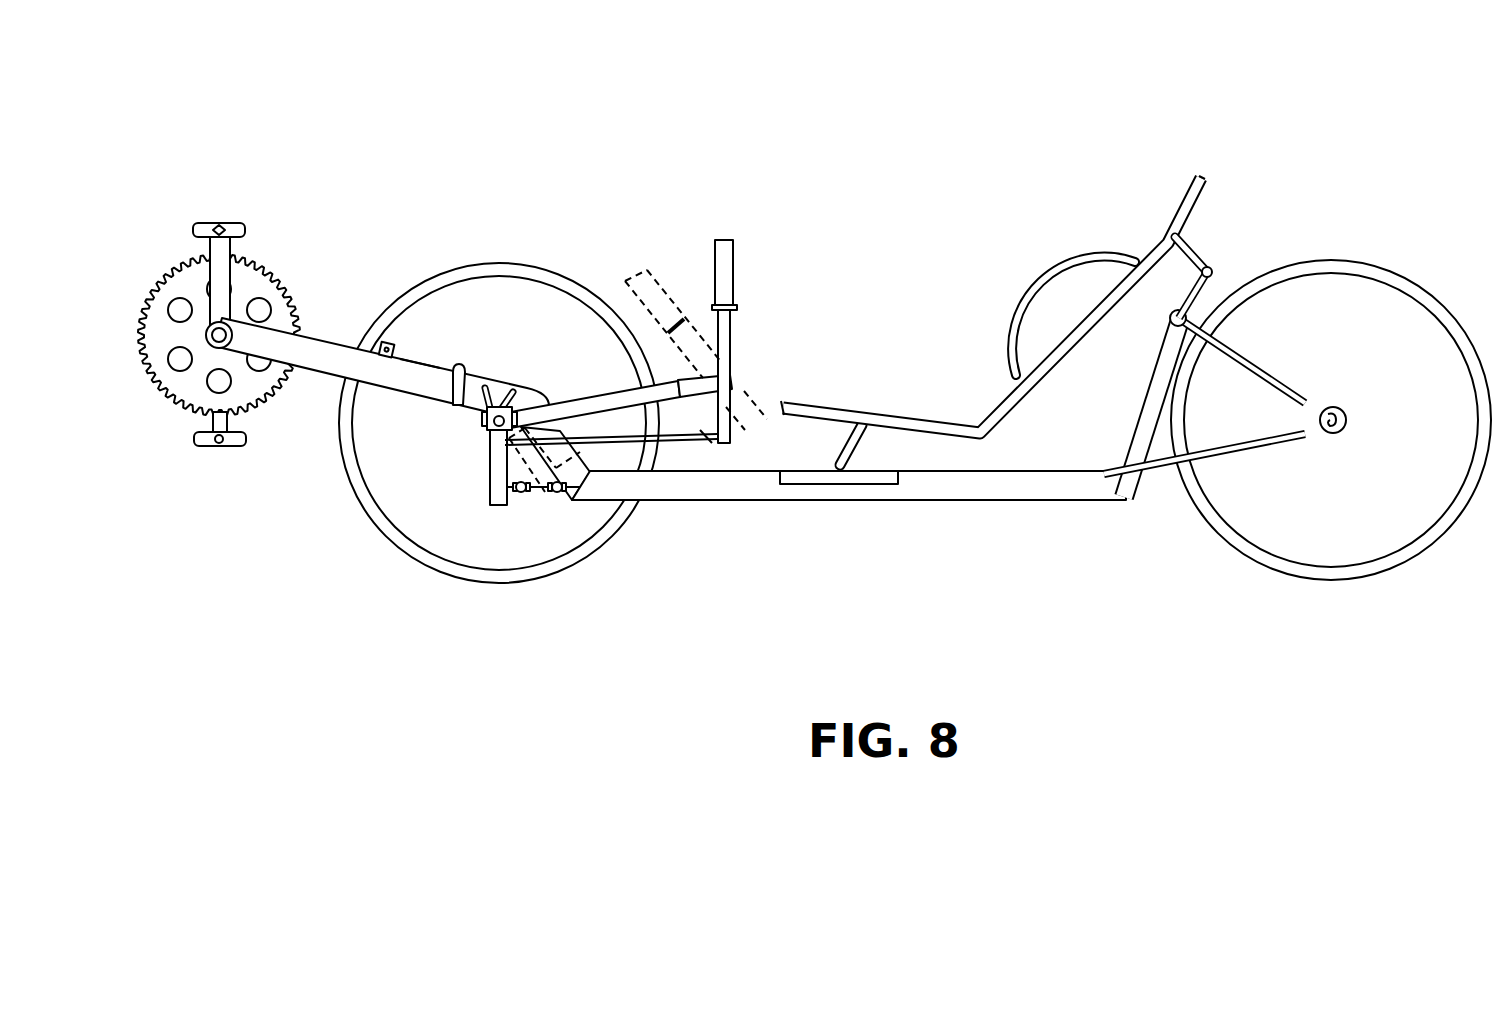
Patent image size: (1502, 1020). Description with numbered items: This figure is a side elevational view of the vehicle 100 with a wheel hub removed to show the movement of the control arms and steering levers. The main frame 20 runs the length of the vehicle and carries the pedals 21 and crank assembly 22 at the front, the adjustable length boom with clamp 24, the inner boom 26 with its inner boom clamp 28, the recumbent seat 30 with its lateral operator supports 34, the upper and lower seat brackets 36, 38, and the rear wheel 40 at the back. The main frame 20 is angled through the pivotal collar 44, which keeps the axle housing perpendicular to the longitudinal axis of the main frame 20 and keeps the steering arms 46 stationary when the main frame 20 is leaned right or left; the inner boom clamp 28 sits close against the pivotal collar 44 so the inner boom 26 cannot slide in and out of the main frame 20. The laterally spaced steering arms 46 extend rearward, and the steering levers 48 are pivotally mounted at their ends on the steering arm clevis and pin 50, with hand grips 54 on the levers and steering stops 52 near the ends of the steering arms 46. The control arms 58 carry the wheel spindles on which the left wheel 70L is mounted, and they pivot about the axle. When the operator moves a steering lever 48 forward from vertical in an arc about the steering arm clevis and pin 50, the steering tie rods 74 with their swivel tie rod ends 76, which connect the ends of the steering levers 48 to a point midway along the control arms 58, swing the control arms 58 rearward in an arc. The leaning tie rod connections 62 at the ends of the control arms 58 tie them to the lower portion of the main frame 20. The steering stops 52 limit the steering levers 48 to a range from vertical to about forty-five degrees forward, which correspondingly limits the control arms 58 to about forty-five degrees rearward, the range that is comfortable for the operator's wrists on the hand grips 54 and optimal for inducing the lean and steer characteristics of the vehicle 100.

The vehicle 100 is at (579, 163).
The main frame 20 is at (915, 500).
The pedals 21 is at (241, 224).
The crank assembly 22 is at (296, 266).
The adjustable length boom with clamp 24 is at (330, 343).
The inner boom 26 is at (423, 365).
The inner boom clamp 28 is at (466, 372).
The recumbent seat 30 is at (985, 408).
The lateral operator supports 34 is at (1020, 300).
The upper seat bracket 36 is at (1212, 263).
The lower seat bracket 38 is at (850, 470).
The rear wheel 40 is at (1410, 565).
The pivotal collar 44 is at (460, 405).
The steering arms 46 is at (605, 392).
The steering levers 48 is at (733, 340).
The steering arm clevis and pin 50 is at (735, 380).
The steering stops 52 is at (708, 404).
The hand grips 54 is at (736, 246).
The control arms 58 is at (489, 479).
The leaning tie rod connections 62 is at (510, 492).
The left wheel 70L is at (420, 560).
The steering tie rods 74 is at (668, 440).
The swivel tie rod ends 76 is at (522, 493).